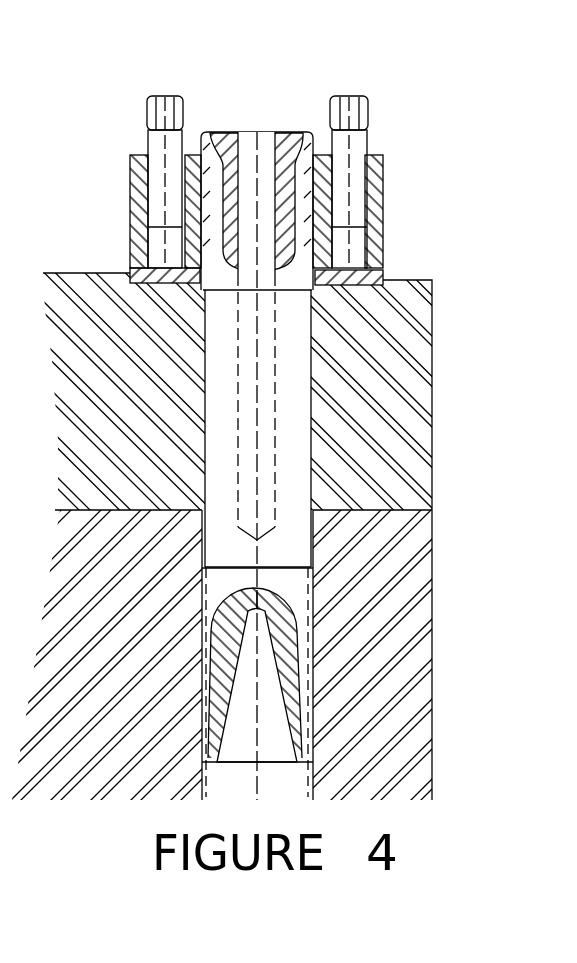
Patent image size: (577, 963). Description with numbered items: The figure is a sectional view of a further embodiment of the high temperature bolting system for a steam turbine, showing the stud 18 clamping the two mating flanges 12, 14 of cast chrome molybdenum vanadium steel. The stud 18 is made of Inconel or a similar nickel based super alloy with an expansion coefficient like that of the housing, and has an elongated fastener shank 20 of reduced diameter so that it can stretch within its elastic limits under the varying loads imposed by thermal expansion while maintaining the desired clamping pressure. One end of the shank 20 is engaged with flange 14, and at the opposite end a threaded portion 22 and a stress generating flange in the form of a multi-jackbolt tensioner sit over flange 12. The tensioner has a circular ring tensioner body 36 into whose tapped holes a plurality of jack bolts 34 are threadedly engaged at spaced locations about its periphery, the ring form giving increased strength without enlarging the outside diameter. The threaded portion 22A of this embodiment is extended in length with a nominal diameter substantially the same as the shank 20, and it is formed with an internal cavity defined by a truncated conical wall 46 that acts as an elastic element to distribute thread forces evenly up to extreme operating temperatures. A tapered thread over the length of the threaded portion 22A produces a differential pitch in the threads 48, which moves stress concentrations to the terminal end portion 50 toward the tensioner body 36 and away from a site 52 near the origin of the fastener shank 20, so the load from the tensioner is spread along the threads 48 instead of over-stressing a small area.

The mating flange 12 is at (288, 529).
The mating flange 14 is at (288, 655).
The stud 18 is at (265, 410).
The fastener shank 20 is at (370, 428).
The threaded portion 22 is at (340, 211).
The threaded portion 22A is at (380, 666).
The jack bolt 34 is at (255, 144).
The tensioner body 36 is at (304, 220).
The truncated conical wall 46 is at (376, 676).
The threads 48 is at (369, 667).
The terminal end portion 50 is at (370, 716).
The site 52 is at (295, 491).